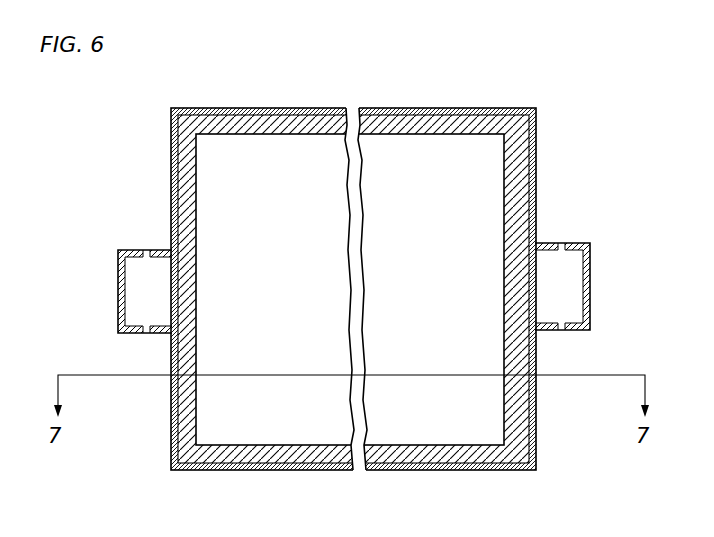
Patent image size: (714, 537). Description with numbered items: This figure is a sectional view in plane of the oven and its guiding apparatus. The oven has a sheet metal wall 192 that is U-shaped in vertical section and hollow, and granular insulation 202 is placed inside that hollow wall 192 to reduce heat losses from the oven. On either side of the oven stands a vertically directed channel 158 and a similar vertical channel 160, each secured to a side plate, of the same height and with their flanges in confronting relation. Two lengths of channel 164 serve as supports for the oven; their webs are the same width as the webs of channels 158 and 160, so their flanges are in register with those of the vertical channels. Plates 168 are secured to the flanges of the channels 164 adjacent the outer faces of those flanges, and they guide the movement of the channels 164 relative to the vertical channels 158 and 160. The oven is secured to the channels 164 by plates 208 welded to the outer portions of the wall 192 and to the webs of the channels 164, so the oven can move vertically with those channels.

The vertically directed channel 158 is at (120, 312).
The vertical channel 160 is at (590, 307).
The channel 164 is at (172, 292).
The plate 168 is at (137, 249).
The sheet metal wall 192 is at (505, 202).
The granular insulation 202 is at (290, 122).
The plate 208 is at (172, 168).